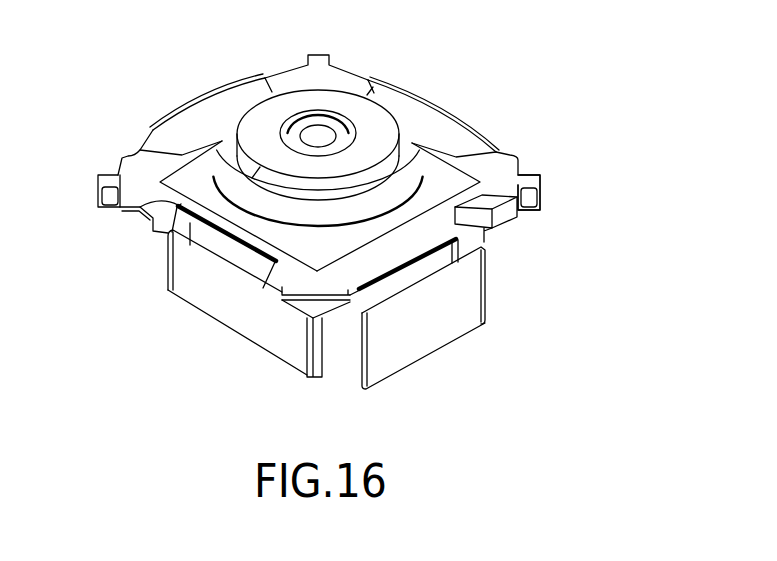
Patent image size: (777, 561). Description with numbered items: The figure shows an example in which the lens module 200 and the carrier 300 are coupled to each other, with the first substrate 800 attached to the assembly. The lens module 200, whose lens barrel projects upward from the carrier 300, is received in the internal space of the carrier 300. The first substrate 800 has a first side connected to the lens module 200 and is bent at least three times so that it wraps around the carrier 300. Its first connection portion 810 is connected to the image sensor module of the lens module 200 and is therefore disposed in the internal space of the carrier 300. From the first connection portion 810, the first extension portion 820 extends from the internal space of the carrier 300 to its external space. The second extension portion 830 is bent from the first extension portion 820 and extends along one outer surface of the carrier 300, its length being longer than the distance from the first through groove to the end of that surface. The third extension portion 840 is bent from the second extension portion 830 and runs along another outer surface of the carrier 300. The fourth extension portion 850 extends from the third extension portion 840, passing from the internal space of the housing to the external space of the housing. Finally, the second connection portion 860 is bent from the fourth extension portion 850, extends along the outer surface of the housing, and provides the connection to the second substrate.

The lens module 200 is at (378, 107).
The carrier 300 is at (508, 152).
The first substrate 800 is at (319, 267).
The first connection portion 810 is at (227, 253).
The first extension portion 820 is at (132, 221).
The second extension portion 830 is at (234, 311).
The third extension portion 840 is at (520, 188).
The fourth extension portion 850 is at (490, 232).
The second connection portion 860 is at (478, 293).